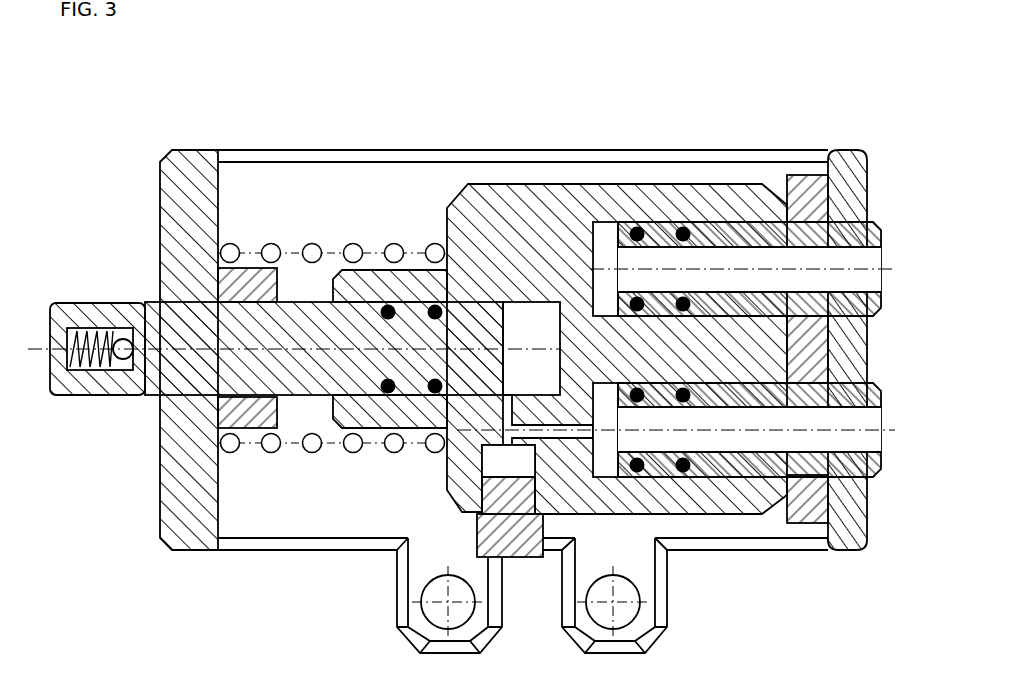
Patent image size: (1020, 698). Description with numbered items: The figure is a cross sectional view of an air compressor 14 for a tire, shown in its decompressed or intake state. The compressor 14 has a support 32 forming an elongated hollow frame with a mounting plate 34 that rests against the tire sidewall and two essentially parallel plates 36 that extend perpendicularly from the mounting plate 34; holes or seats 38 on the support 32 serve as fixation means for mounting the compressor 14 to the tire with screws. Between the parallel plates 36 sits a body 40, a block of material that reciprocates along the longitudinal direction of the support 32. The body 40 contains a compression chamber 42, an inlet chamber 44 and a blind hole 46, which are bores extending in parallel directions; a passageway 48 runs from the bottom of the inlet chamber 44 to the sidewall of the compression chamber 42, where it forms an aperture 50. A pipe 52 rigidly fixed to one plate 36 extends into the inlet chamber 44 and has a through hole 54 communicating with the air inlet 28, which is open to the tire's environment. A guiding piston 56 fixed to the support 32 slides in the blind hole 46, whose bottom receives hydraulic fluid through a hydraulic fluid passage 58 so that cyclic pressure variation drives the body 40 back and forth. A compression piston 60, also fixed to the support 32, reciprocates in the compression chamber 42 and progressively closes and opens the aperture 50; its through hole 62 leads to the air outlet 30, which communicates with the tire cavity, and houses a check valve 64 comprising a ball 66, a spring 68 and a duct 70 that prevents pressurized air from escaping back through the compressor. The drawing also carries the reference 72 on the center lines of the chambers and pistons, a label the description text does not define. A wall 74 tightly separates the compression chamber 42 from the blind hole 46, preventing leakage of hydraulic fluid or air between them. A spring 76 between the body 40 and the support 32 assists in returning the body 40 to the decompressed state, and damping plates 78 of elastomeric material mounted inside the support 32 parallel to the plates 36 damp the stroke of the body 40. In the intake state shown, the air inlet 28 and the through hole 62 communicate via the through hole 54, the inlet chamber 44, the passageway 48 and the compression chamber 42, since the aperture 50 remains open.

The air compressor 14 is at (218, 119).
The air inlet 28 is at (868, 440).
The air outlet 30 is at (31, 353).
The support 32 is at (412, 150).
The mounting plate 34 is at (331, 207).
The parallel plates 36 is at (192, 523).
The holes or seats 38 is at (442, 605).
The body 40 is at (482, 202).
The compression chamber 42 is at (516, 337).
The inlet chamber 44 is at (607, 460).
The blind hole 46 is at (605, 240).
The passageway 48 is at (510, 443).
The aperture 50 is at (509, 396).
The pipe 52 is at (753, 470).
The through hole 54 is at (733, 444).
The guiding piston 56 is at (753, 230).
The hydraulic fluid passage 58 is at (723, 280).
The compression piston 60 is at (372, 328).
The through hole 62 is at (289, 340).
The check valve 64 is at (77, 258).
The ball 66 is at (122, 360).
The spring 68 is at (92, 372).
The duct 70 is at (46, 354).
The axis 72 is at (40, 349).
The wall 74 is at (573, 305).
The spring 76 is at (310, 453).
The damping plate 78 is at (246, 428).